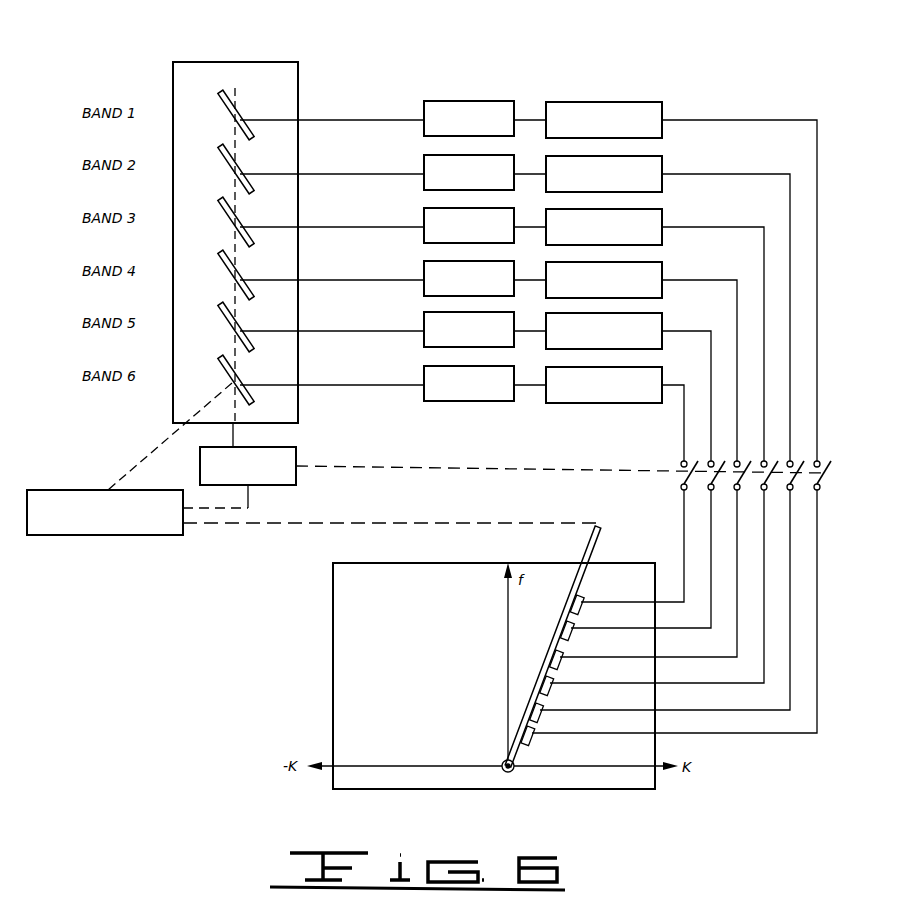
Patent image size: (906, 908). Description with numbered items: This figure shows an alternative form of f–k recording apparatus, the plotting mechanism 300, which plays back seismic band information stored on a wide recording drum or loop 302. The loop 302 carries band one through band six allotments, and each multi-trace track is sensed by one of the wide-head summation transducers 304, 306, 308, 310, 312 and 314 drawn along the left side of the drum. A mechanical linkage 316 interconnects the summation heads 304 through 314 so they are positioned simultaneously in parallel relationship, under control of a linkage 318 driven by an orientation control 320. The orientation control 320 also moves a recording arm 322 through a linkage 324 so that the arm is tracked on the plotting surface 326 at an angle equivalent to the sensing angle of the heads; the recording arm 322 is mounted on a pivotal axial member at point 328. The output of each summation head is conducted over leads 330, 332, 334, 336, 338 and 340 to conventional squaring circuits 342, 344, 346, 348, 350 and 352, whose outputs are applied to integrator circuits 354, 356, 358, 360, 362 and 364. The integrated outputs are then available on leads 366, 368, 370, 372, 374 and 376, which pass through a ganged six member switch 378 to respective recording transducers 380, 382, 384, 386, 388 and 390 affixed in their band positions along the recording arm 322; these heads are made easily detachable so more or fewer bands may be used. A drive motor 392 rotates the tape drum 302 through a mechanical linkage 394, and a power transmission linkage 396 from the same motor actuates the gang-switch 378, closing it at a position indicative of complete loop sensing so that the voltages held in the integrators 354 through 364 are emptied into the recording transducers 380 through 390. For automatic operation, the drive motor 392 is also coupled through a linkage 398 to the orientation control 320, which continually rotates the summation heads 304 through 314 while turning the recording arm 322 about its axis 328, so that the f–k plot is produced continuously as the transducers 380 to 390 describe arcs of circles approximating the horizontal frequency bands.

The plotting mechanism 300 is at (558, 74).
The recording drum or loop 302 is at (296, 72).
The wide-head summation transducer 304 is at (250, 131).
The wide-head summation transducer 306 is at (250, 184).
The wide-head summation transducer 308 is at (250, 237).
The wide-head summation transducer 310 is at (250, 289).
The wide-head summation transducer 312 is at (250, 342).
The wide-head summation transducer 314 is at (250, 396).
The mechanical linkage 316 is at (231, 184).
The linkage 318 is at (192, 421).
The orientation control 320 is at (146, 537).
The recording arm 322 is at (590, 545).
The linkage 324 is at (398, 525).
The plotting surface 326 is at (424, 677).
The pivotal axial member 328 is at (501, 771).
The lead 330 is at (358, 120).
The lead 332 is at (358, 174).
The lead 334 is at (358, 227).
The lead 336 is at (358, 280).
The lead 338 is at (358, 331).
The lead 340 is at (358, 385).
The squaring circuit 342 is at (475, 101).
The squaring circuit 344 is at (475, 155).
The squaring circuit 346 is at (475, 208).
The squaring circuit 348 is at (475, 261).
The squaring circuit 350 is at (475, 312).
The squaring circuit 352 is at (475, 366).
The integrator circuit 354 is at (614, 102).
The integrator circuit 356 is at (604, 167).
The integrator circuit 358 is at (604, 209).
The integrator circuit 360 is at (604, 262).
The integrator circuit 362 is at (604, 313).
The integrator circuit 364 is at (604, 367).
The lead 366 is at (817, 156).
The lead 368 is at (790, 210).
The lead 370 is at (764, 262).
The lead 372 is at (737, 310).
The lead 374 is at (711, 360).
The lead 376 is at (684, 433).
The ganged six member switch 378 is at (672, 506).
The recording transducer 380 is at (537, 735).
The recording transducer 382 is at (546, 712).
The recording transducer 384 is at (556, 682).
The recording transducer 386 is at (566, 655).
The recording transducer 388 is at (576, 630).
The recording transducer 390 is at (586, 597).
The drive motor 392 is at (296, 456).
The mechanical linkage 394 is at (236, 447).
The power transmission linkage 396 is at (408, 469).
The linkage 398 is at (250, 509).